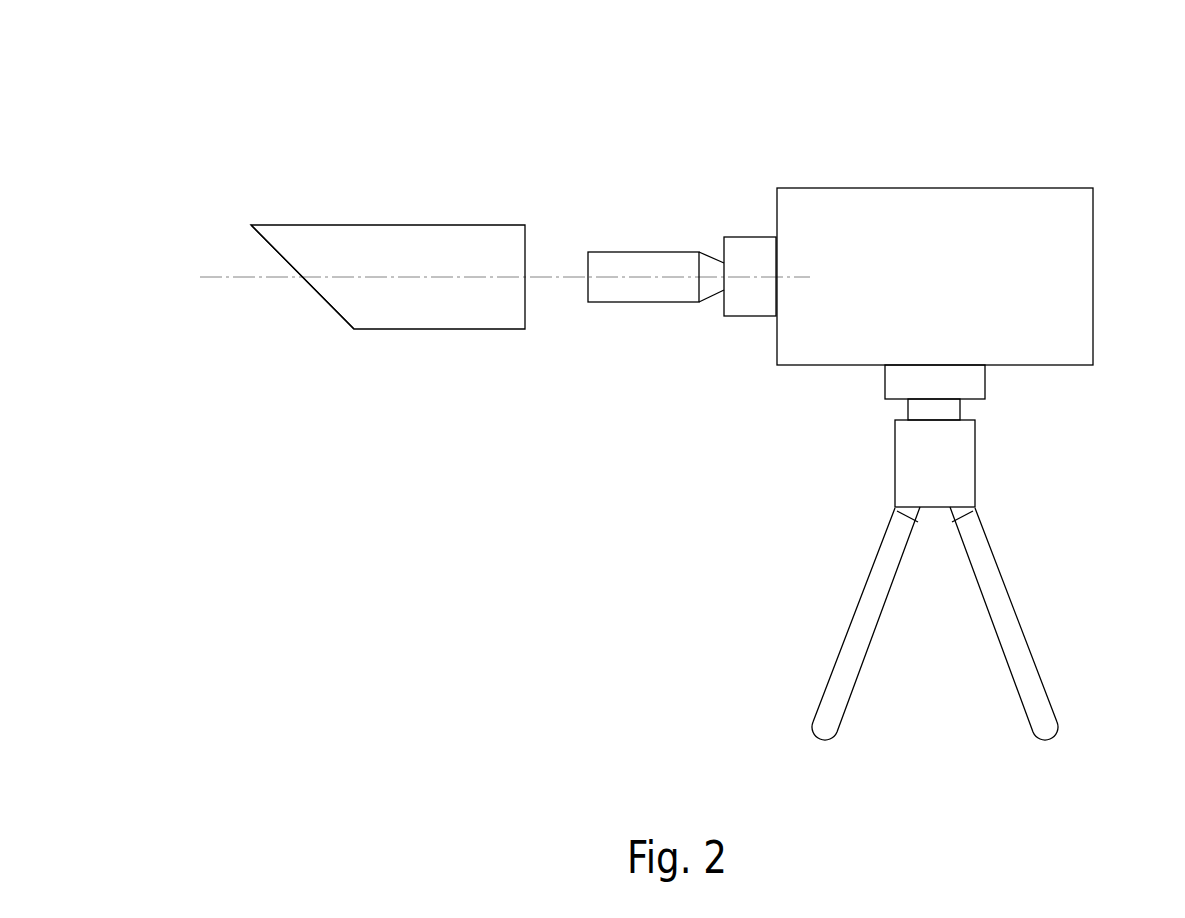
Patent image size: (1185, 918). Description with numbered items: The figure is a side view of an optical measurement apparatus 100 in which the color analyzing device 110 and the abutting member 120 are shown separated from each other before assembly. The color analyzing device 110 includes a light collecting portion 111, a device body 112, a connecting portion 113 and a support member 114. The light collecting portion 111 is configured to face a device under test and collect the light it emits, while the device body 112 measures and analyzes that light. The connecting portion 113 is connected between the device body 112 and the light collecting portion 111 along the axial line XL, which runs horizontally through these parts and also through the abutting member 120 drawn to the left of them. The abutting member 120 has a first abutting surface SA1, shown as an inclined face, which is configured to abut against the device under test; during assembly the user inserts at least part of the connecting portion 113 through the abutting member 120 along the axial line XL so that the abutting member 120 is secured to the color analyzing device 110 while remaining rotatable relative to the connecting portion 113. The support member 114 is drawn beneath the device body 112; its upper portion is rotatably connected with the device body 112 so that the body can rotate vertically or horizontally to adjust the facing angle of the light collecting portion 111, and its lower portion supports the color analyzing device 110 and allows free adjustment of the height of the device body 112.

The optical measurement apparatus 100 is at (1171, 42).
The color analyzing device 110 is at (336, 565).
The light collecting portion 111 is at (633, 262).
The device body 112 is at (912, 198).
The connecting portion 113 is at (748, 245).
The support member 114 is at (852, 636).
The abutting member 120 is at (388, 262).
The axial line XL is at (240, 281).
The first abutting surface SA1 is at (327, 309).